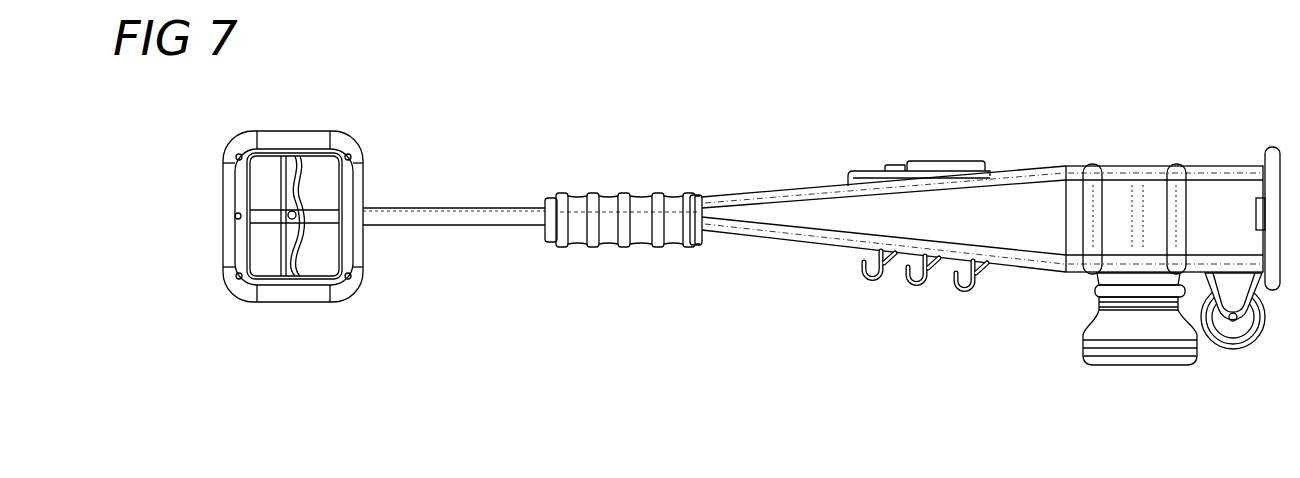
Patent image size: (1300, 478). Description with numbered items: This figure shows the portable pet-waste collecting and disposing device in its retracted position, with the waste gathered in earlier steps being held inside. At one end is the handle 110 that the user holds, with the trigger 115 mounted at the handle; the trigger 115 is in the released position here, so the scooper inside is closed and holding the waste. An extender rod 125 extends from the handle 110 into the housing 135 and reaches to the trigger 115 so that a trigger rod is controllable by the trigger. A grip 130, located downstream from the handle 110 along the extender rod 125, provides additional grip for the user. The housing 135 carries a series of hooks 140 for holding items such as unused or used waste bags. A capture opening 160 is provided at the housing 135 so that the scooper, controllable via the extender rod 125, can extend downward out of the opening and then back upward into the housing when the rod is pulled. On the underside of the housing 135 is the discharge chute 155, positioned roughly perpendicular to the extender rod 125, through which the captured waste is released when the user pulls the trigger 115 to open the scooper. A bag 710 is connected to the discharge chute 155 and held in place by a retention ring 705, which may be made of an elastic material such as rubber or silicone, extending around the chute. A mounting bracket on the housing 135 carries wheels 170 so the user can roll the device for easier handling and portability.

The handle 110 is at (223, 213).
The trigger 115 is at (281, 249).
The extender rod 125 is at (441, 207).
The grip 130 is at (622, 193).
The housing 135 is at (766, 193).
The hooks 140 is at (915, 292).
The discharge chute 155 is at (1199, 362).
The capture opening 160 is at (1271, 147).
The wheels 170 is at (1262, 330).
The retention ring 705 is at (1097, 297).
The bag 710 is at (1083, 357).